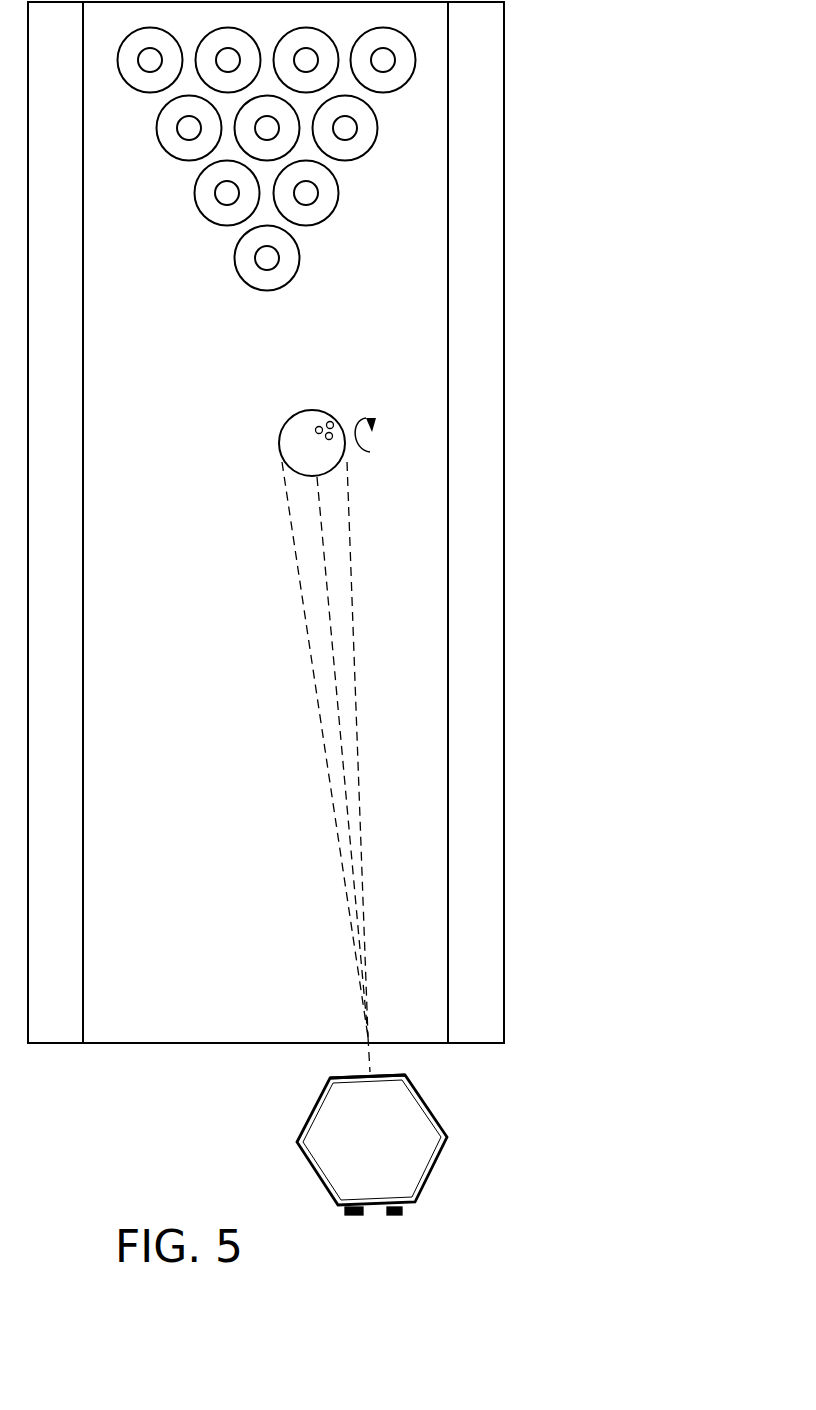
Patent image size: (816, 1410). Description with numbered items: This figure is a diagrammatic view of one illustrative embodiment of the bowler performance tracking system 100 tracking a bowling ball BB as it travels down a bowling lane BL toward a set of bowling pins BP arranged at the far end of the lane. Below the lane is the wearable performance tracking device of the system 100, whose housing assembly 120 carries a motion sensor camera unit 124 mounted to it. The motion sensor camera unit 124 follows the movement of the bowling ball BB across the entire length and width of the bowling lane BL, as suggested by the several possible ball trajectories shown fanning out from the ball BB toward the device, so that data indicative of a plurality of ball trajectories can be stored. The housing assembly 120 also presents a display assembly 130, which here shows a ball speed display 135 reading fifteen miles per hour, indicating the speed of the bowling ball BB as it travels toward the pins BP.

The bowling lane BL is at (445, 672).
The bowling pins BP is at (340, 193).
The bowling ball BB is at (280, 440).
The bowler performance tracking system 100 is at (562, 992).
The housing assembly 120 is at (357, 1163).
The motion sensor camera unit 124 is at (388, 1074).
The display assembly 130 is at (350, 1140).
The ball speed display 135 is at (416, 1174).